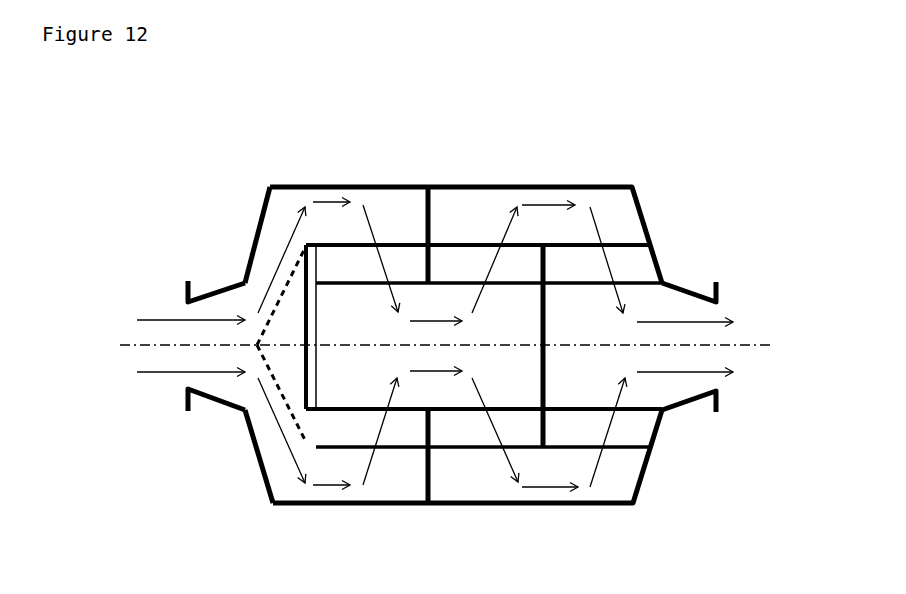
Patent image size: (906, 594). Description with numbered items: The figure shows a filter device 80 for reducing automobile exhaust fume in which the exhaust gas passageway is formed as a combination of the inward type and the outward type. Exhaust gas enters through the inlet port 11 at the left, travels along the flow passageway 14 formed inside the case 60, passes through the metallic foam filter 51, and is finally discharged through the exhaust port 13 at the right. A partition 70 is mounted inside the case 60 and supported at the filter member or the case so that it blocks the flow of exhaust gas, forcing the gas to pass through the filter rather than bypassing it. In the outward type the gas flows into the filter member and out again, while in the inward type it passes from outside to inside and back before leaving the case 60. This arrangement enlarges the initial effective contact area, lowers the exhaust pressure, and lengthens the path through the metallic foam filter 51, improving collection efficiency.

The inlet port 11 is at (193, 347).
The exhaust port 13 is at (712, 345).
The flow passageway 14 is at (618, 215).
The metallic foam filter 51 is at (332, 268).
The case 60 is at (550, 187).
The partition 70 is at (433, 203).
The filter device 80 is at (353, 177).